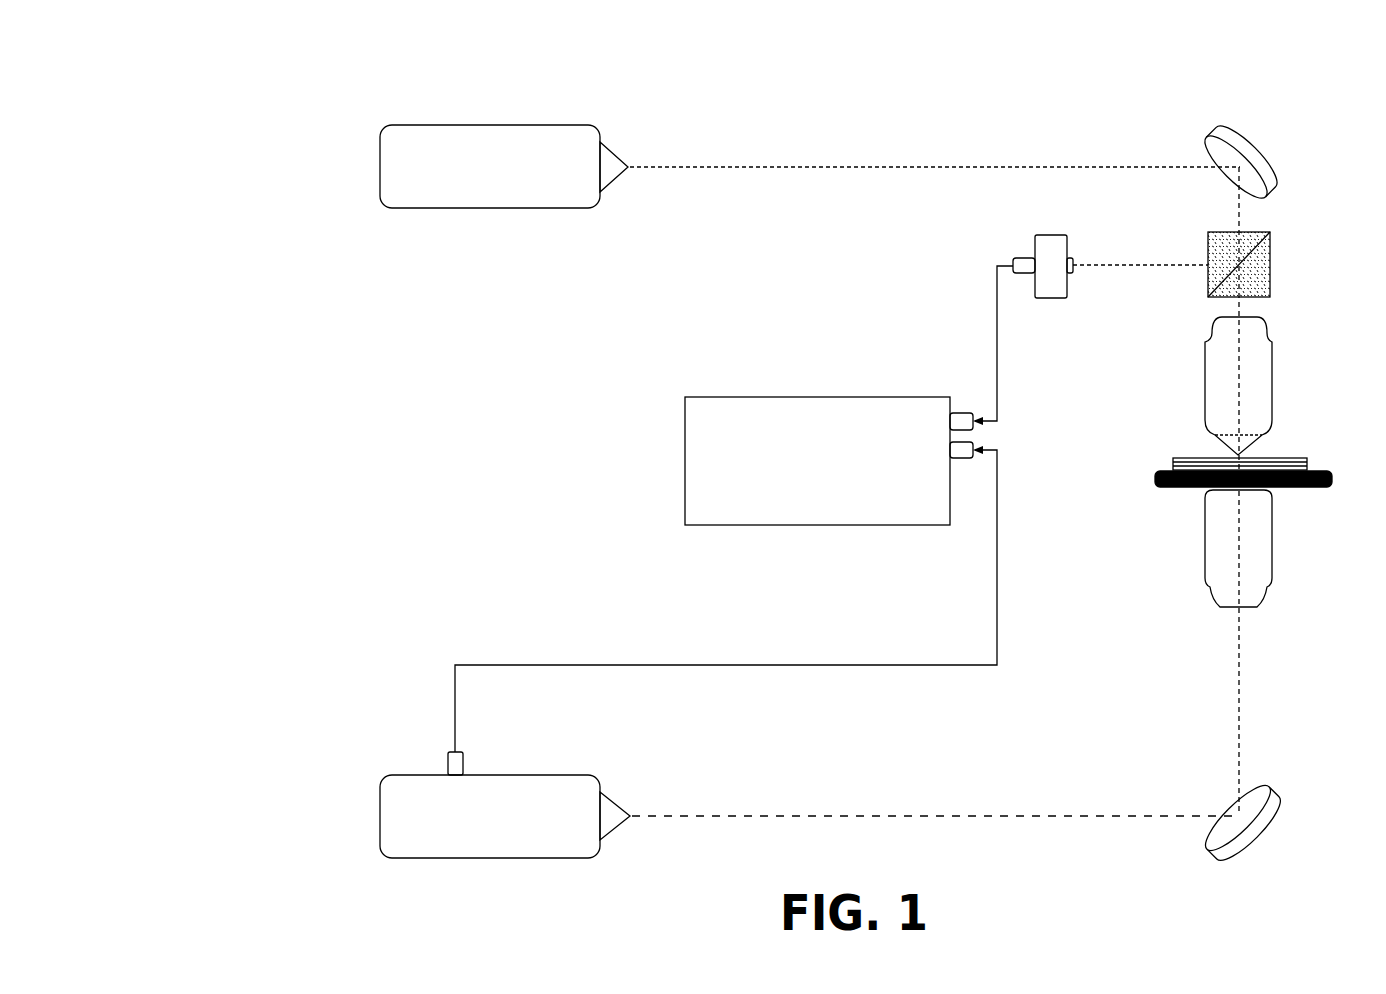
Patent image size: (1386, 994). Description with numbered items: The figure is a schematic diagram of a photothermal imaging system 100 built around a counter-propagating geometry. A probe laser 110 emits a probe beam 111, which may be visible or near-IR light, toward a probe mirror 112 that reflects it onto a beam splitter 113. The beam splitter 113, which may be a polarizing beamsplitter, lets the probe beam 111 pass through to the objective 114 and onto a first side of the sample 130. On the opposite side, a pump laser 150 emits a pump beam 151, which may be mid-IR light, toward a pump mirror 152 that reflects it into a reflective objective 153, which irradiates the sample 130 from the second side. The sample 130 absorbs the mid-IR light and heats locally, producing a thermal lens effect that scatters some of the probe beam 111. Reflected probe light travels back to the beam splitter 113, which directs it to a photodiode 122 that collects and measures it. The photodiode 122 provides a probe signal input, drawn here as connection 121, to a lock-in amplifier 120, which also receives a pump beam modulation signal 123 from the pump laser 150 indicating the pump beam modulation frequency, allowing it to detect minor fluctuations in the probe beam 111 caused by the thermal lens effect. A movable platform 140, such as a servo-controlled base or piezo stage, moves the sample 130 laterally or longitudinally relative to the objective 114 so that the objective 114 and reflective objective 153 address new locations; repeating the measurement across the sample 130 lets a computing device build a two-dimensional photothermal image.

The photothermal imaging system 100 is at (316, 80).
The probe laser 110 is at (504, 166).
The probe beam 111 is at (781, 163).
The probe mirror 112 is at (1247, 142).
The beam splitter 113 is at (1250, 232).
The objective 114 is at (1258, 318).
The lock-in amplifier 120 is at (829, 461).
The detector signal line 121 is at (997, 338).
The photodiode 122 is at (1050, 235).
The pump beam modulation signal 123 is at (997, 592).
The sample 130 is at (1190, 458).
The movable platform 140 is at (1170, 490).
The pump laser 150 is at (505, 805).
The pump beam 151 is at (783, 814).
The pump mirror 152 is at (1255, 838).
The reflective objective 153 is at (1262, 606).